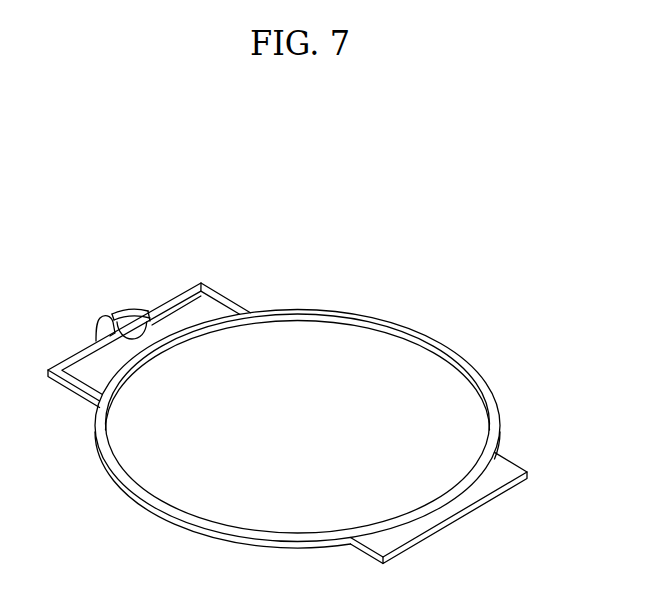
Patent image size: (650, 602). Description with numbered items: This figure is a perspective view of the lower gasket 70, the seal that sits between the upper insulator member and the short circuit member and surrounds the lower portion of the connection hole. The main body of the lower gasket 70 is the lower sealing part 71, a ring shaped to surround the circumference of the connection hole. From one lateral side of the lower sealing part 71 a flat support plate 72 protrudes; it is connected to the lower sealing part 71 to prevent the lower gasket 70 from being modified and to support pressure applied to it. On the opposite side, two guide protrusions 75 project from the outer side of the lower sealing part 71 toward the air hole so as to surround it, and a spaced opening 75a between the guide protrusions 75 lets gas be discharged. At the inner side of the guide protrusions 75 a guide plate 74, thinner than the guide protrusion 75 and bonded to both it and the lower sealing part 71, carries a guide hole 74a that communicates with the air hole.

The lower gasket 70 is at (363, 292).
The lower sealing part 71 is at (432, 340).
The support plate 72 is at (484, 487).
The guide plate 74 is at (80, 368).
The guide hole 74a is at (129, 318).
The guide protrusion 75 is at (96, 322).
The spaced opening 75a is at (113, 313).